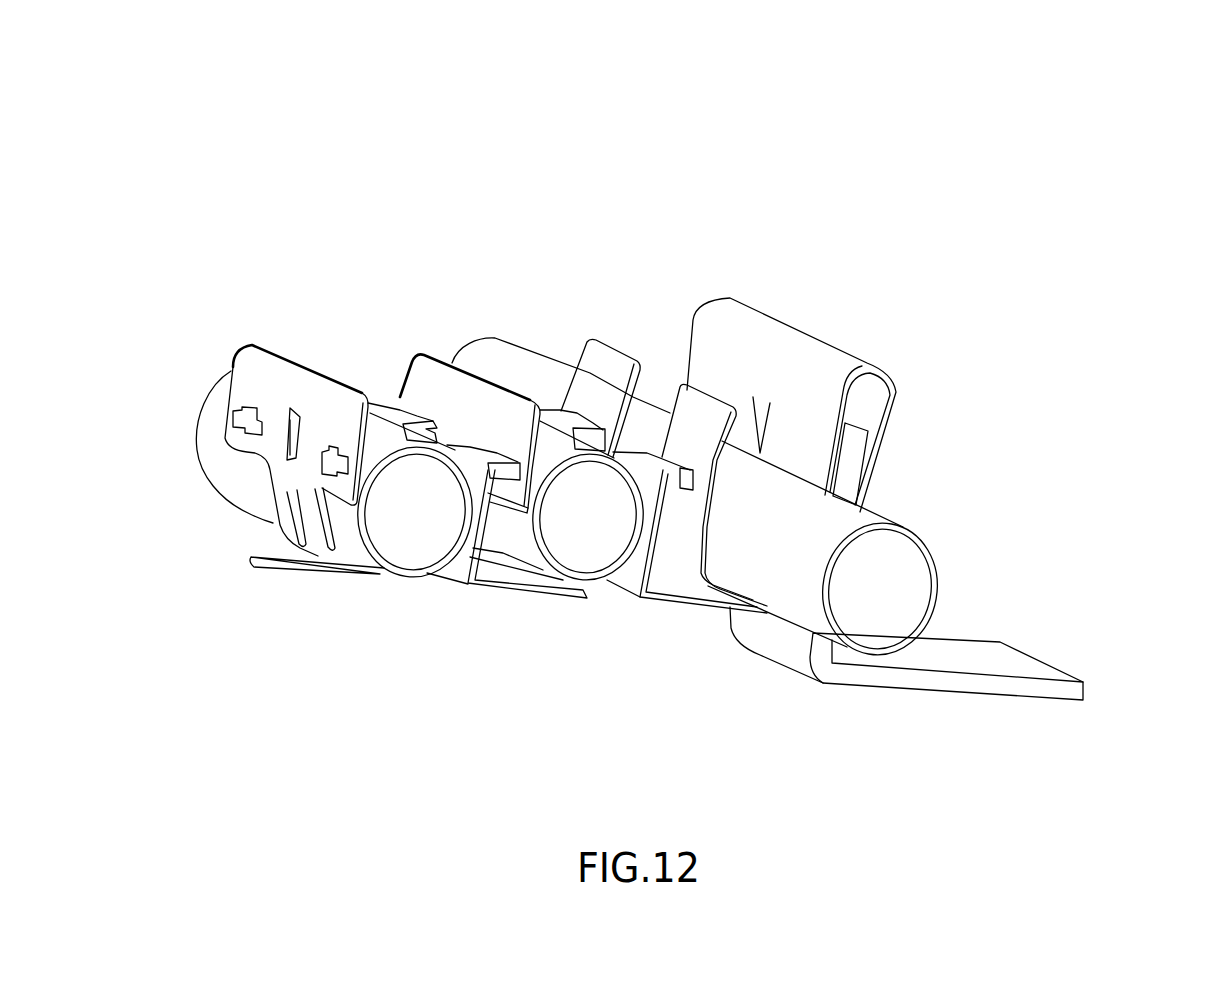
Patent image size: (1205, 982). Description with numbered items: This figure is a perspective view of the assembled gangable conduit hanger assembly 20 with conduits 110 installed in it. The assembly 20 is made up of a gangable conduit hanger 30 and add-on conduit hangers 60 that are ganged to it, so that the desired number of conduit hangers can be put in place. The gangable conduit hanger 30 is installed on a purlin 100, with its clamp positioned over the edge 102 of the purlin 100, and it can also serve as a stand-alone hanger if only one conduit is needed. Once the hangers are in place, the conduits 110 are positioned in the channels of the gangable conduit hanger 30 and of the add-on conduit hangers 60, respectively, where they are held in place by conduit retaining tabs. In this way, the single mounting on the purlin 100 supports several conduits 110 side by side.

The gangable conduit hanger assembly 20 is at (436, 126).
The gangable conduit hanger 30 is at (834, 272).
The add-on conduit hangers 60 is at (226, 293).
The purlin 100 is at (1022, 664).
The edge 102 is at (850, 425).
The conduit 110 is at (228, 470).